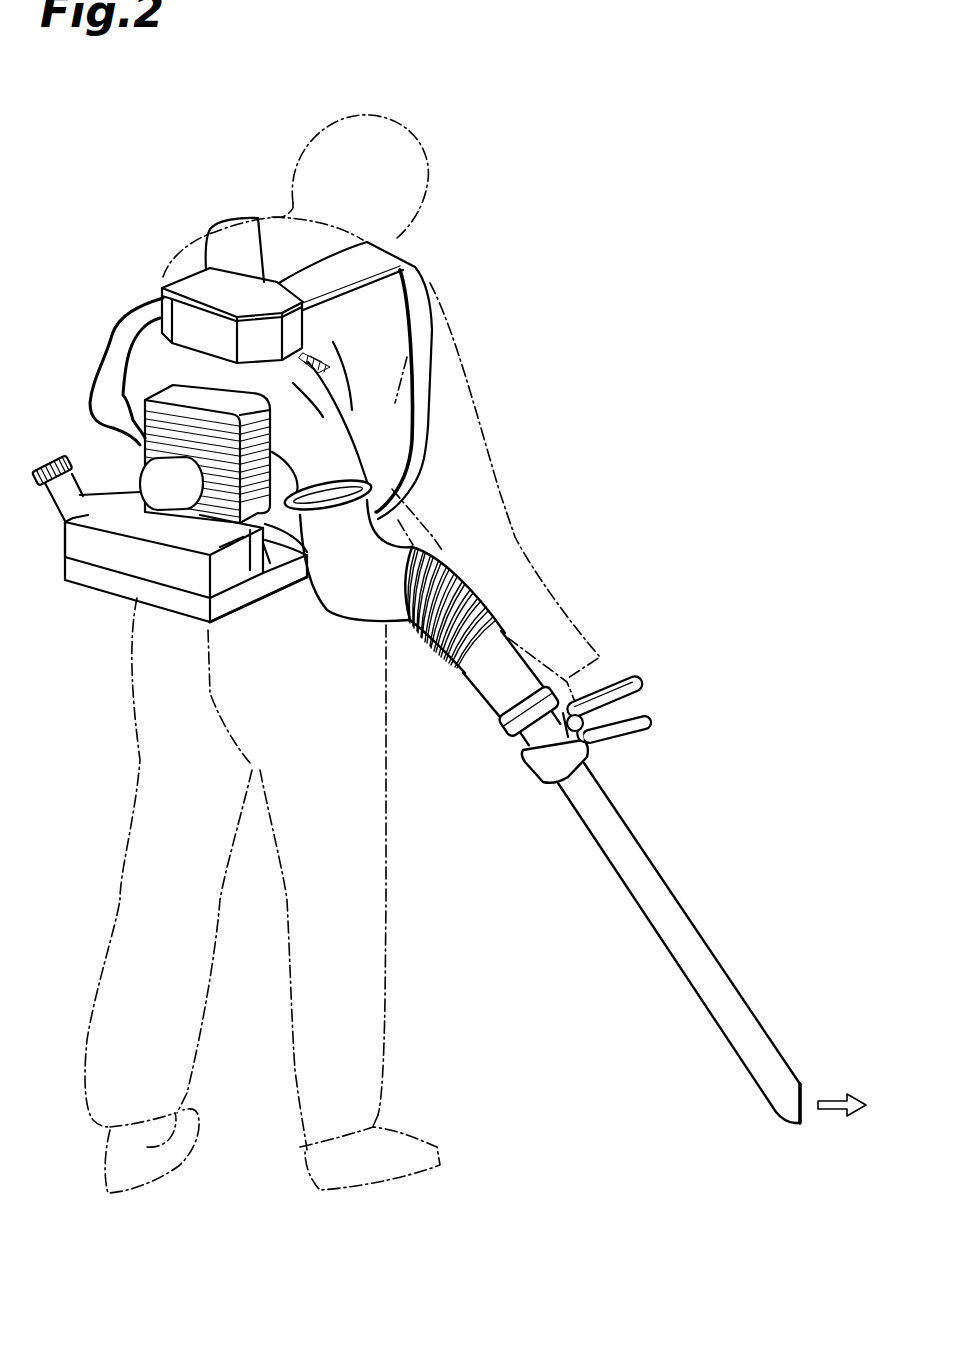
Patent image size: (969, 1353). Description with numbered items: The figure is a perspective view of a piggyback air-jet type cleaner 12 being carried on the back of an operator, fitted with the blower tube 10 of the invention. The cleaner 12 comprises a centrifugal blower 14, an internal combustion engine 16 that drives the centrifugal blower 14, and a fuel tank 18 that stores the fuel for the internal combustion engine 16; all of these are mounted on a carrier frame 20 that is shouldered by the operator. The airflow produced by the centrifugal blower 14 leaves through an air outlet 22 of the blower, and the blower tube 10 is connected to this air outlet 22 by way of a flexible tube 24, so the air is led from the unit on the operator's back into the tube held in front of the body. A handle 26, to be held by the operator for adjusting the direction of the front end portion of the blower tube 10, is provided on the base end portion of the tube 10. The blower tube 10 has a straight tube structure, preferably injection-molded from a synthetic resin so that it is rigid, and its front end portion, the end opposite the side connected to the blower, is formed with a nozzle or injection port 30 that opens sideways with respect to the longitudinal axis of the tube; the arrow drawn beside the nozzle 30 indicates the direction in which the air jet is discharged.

The blower tube 10 is at (619, 829).
The piggyback air-jet type cleaner 12 is at (160, 236).
The centrifugal blower 14 is at (290, 394).
The internal combustion engine 16 is at (188, 393).
The fuel tank 18 is at (117, 562).
The carrier frame 20 is at (252, 596).
The air outlet 22 is at (350, 517).
The flexible tube 24 is at (380, 546).
The handle 26 is at (627, 687).
The nozzle 30 is at (802, 1093).